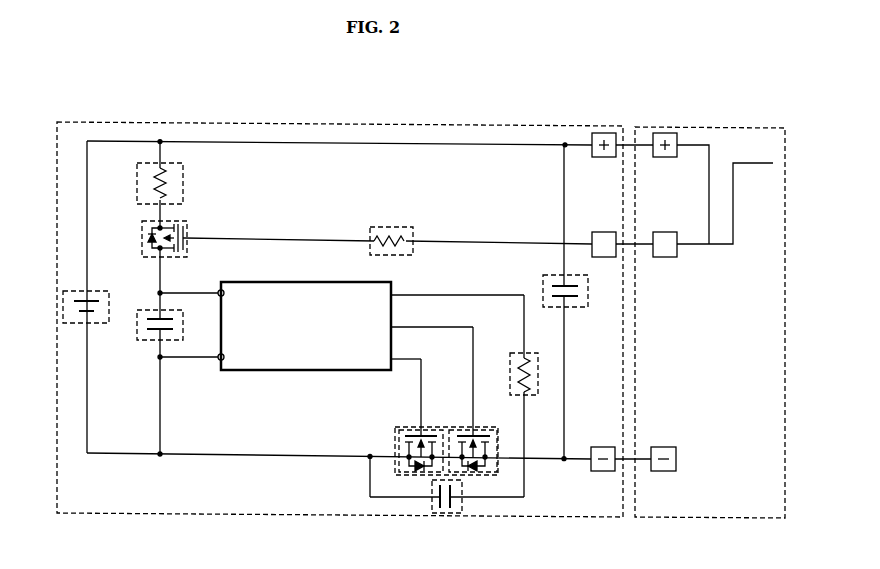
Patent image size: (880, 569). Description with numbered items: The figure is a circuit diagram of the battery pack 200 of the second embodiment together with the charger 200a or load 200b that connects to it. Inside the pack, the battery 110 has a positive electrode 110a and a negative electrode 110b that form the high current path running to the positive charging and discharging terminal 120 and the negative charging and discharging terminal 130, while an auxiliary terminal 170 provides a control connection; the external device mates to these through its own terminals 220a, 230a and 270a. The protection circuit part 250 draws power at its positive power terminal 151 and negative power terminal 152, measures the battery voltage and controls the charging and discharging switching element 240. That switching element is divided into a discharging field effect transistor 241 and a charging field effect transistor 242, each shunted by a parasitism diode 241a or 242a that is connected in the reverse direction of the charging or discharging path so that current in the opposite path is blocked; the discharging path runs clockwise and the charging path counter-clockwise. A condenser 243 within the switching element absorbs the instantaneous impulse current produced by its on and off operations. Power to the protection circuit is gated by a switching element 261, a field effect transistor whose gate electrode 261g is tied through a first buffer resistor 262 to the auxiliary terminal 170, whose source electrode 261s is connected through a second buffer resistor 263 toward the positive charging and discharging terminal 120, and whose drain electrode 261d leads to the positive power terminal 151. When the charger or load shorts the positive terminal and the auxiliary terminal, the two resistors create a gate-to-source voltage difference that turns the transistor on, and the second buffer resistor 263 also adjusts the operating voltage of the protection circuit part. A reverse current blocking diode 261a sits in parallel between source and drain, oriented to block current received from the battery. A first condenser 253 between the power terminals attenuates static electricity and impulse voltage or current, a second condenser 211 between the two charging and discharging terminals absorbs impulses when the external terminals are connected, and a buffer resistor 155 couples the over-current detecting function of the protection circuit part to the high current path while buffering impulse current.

The battery pack 200 is at (343, 119).
The charger 200a is at (710, 304).
The load 200b is at (742, 110).
The battery 110 is at (57, 304).
The positive electrode 110a is at (74, 296).
The negative electrode 110b is at (76, 317).
The positive charging and discharging terminal 120 is at (603, 133).
The negative charging and discharging terminal 130 is at (602, 447).
The auxiliary terminal 170 is at (604, 258).
The terminal of charger or load 220a is at (664, 133).
The terminal of charger or load 230a is at (662, 447).
The terminal of charger or load 270a is at (665, 258).
The protection circuit part 250 is at (295, 281).
The positive power terminal 151 is at (218, 292).
The negative power terminal 152 is at (218, 361).
The first condenser 253 is at (138, 335).
The switching element 261 is at (173, 232).
The source electrode 261s is at (160, 228).
The drain electrode 261d is at (160, 249).
The gate electrode 261g is at (186, 238).
The reverse current blocking diode 261a is at (150, 238).
The first buffer resistor 262 is at (387, 227).
The second buffer resistor 263 is at (137, 185).
The second condenser 211 is at (543, 280).
The buffer resistor 155 is at (530, 353).
The charging and discharging switching element 240 is at (428, 449).
The discharging field effect transistor 241 is at (412, 449).
The charging field effect transistor 242 is at (478, 449).
The parasitism diode for blocking a charging path 241a is at (420, 470).
The parasitism diode for blocking a discharging path 242a is at (474, 470).
The condenser 243 is at (448, 517).